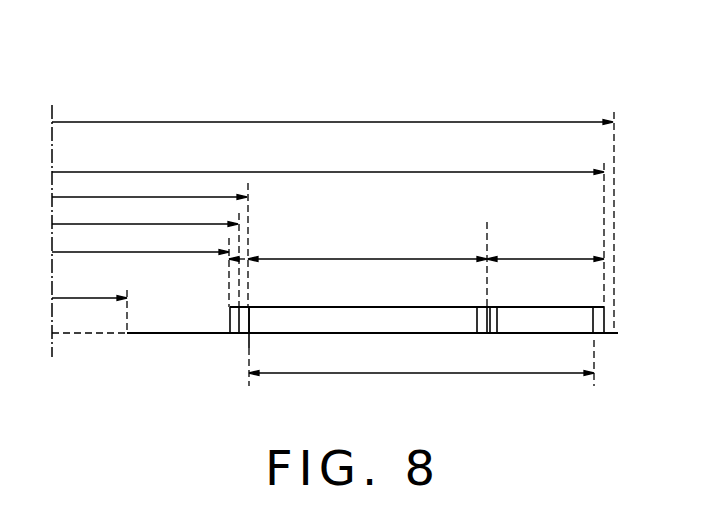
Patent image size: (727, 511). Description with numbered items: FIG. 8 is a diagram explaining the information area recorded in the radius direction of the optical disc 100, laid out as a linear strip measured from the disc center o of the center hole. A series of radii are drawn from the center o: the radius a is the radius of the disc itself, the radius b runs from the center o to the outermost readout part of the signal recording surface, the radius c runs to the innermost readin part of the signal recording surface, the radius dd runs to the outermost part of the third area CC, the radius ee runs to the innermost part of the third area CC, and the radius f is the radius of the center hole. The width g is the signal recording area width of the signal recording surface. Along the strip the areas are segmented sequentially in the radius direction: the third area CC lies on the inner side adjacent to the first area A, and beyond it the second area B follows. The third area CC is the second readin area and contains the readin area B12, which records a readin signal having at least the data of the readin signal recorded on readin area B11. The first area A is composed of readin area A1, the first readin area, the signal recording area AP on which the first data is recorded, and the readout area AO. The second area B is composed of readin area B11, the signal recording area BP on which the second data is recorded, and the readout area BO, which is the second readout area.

The optical disc 100 is at (355, 48).
The disc center o is at (47, 219).
The radius a is at (333, 215).
The radius to outermost part of signal recording surface b is at (328, 227).
The radius to innermost part of signal recording surface c is at (150, 281).
The radius to outermost part of third area dd is at (145, 255).
The radius to innermost part of third area ee is at (148, 269).
The radius of center hole f is at (89, 303).
The signal recording area width g is at (421, 363).
The third area CC is at (240, 263).
The first area A is at (367, 264).
The second area B is at (545, 247).
The readin area B12 is at (229, 318).
The readin area A1 is at (244, 306).
The signal recording area AP is at (347, 308).
The readout area AO is at (483, 306).
The readin area B11 is at (492, 306).
The signal recording area BP is at (543, 310).
The readout area BO is at (601, 306).